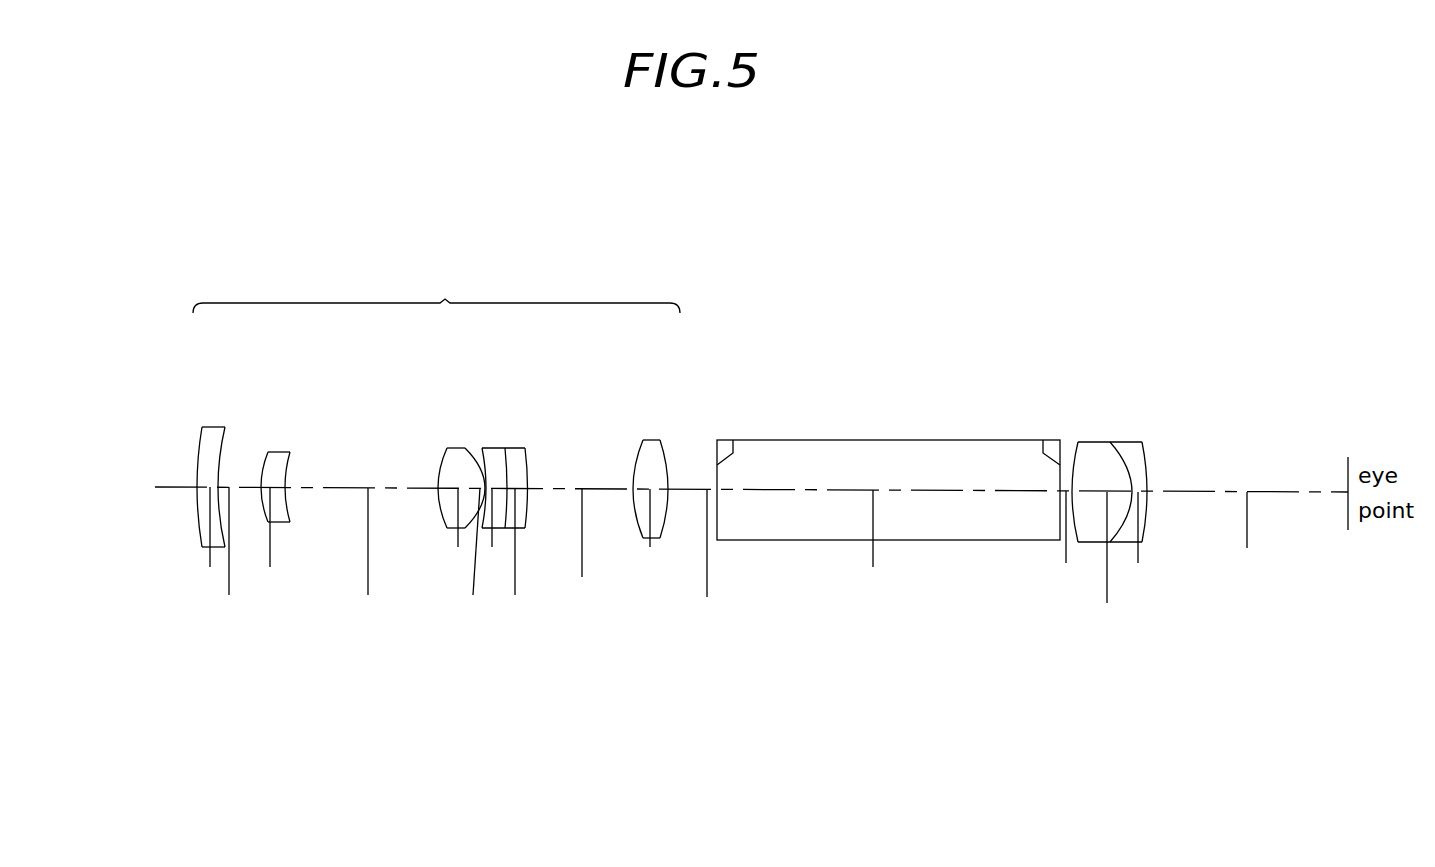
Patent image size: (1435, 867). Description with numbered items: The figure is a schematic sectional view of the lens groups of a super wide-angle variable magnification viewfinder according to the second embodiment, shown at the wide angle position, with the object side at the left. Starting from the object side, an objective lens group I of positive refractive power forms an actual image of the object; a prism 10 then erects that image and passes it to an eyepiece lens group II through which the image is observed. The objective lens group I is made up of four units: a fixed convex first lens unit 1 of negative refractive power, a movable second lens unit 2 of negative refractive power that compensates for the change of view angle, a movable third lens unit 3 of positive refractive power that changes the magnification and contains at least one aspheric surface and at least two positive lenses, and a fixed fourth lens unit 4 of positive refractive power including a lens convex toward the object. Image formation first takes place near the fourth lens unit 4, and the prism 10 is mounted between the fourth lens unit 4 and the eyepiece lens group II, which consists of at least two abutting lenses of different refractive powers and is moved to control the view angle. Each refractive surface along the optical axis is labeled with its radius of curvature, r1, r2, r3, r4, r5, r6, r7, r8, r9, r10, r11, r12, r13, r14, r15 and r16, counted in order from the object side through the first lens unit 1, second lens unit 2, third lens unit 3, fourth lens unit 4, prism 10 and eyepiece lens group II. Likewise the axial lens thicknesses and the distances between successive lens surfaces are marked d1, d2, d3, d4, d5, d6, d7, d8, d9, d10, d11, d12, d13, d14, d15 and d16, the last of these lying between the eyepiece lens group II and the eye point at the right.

The first lens unit 1 is at (209, 430).
The second lens unit 2 is at (285, 418).
The third lens unit 3 is at (492, 422).
The fourth lens unit 4 is at (651, 427).
The prism 10 is at (887, 431).
The objective lens group I is at (436, 291).
The eyepiece lens group II is at (1118, 410).
The radius of curvature of refractive surface r1 is at (186, 465).
The radius of curvature of refractive surface r2 is at (215, 427).
The radius of curvature of refractive surface r3 is at (267, 455).
The radius of curvature of refractive surface r4 is at (287, 452).
The radius of curvature of refractive surface r5 is at (442, 448).
The radius of curvature of refractive surface r6 is at (467, 448).
The radius of curvature of refractive surface r7 is at (478, 448).
The radius of curvature of refractive surface r8 is at (513, 448).
The radius of curvature of refractive surface r9 is at (540, 447).
The radius of curvature of refractive surface r10 is at (621, 466).
The radius of curvature of refractive surface r11 is at (681, 463).
The radius of curvature of refractive surface r12 is at (735, 453).
The radius of curvature of refractive surface r13 is at (1043, 453).
The radius of curvature of refractive surface r14 is at (1072, 461).
The radius of curvature of refractive surface r15 is at (1098, 442).
The radius of curvature of refractive surface r16 is at (1163, 461).
The lens thickness or surface distance d1 is at (208, 541).
The lens thickness or surface distance d2 is at (225, 557).
The lens thickness or surface distance d3 is at (270, 541).
The lens thickness or surface distance d4 is at (368, 558).
The lens thickness or surface distance d5 is at (458, 534).
The lens thickness or surface distance d6 is at (472, 558).
The lens thickness or surface distance d7 is at (494, 534).
The lens thickness or surface distance d8 is at (515, 558).
The lens thickness or surface distance d9 is at (582, 552).
The lens thickness or surface distance d10 is at (650, 534).
The lens thickness or surface distance d11 is at (702, 558).
The lens thickness or surface distance d12 is at (873, 547).
The lens thickness or surface distance d13 is at (1065, 544).
The lens thickness or surface distance d14 is at (1107, 562).
The lens thickness or surface distance d15 is at (1140, 545).
The lens thickness or surface distance d16 is at (1246, 537).